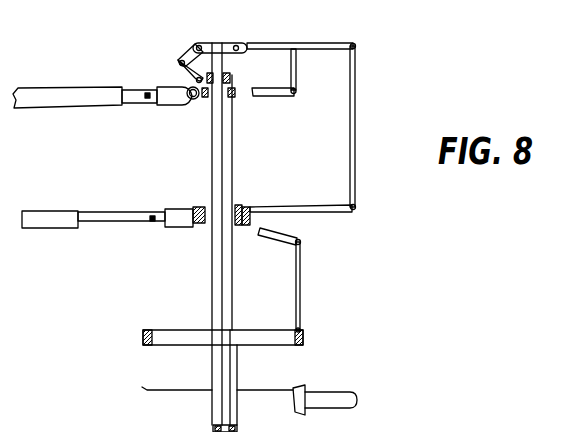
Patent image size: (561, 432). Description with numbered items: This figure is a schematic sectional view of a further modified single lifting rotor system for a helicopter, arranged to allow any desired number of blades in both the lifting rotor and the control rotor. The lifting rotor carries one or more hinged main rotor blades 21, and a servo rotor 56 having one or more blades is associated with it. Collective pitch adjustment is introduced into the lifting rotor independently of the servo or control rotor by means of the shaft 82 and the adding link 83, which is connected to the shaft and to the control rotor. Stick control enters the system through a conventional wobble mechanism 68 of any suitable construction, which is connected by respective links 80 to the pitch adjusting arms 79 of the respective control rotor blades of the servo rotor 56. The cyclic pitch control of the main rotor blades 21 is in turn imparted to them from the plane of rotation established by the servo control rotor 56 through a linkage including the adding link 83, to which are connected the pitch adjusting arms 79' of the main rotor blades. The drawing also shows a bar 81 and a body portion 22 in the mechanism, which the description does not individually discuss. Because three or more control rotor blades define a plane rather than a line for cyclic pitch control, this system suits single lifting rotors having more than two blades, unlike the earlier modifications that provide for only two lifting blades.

The main rotor blades 21 is at (98, 78).
The pitch adjusting arms of the main rotor blades 79' is at (208, 79).
The adding link 83 is at (291, 46).
The shaft 82 is at (224, 143).
The servo rotor 56 is at (55, 211).
The pitch adjusting arms of the control rotor blades 79 is at (245, 236).
The bar 81 is at (244, 206).
The links 80 is at (300, 290).
The wobble mechanism 68 is at (305, 338).
The body 22 is at (240, 378).